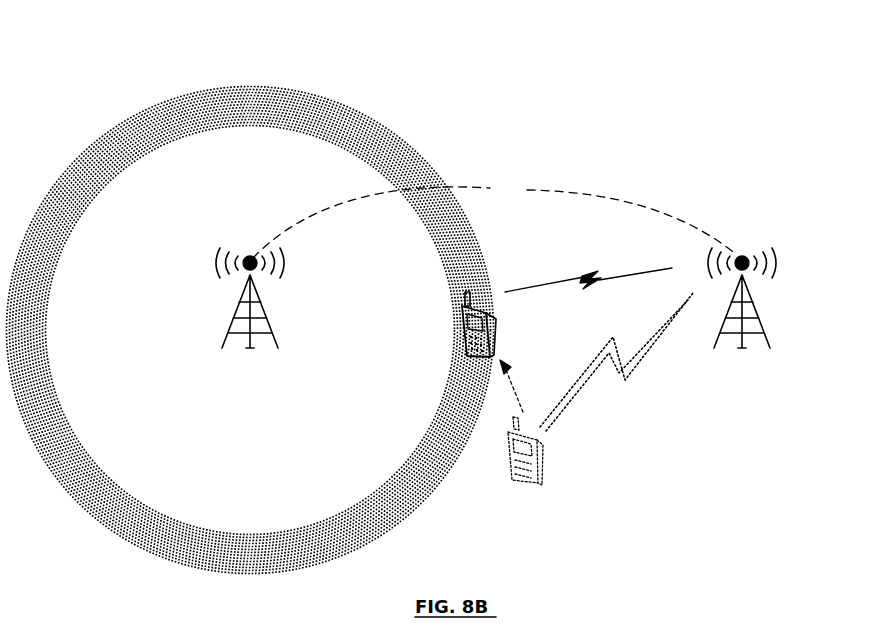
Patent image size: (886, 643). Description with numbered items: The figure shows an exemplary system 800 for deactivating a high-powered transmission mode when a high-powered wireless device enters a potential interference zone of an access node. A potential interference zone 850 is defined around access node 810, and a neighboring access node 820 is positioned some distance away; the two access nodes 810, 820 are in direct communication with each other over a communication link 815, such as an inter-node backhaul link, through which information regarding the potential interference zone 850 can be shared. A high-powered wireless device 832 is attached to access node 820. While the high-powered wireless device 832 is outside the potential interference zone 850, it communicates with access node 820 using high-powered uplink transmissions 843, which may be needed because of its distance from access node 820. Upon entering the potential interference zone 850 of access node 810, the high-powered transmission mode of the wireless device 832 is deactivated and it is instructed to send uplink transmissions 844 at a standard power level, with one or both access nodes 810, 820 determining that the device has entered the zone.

The system 800 is at (585, 56).
The access node 810 is at (230, 333).
The communication link 815 is at (514, 166).
The access node 820 is at (766, 336).
The high-powered wireless device 832 is at (497, 338).
The high-powered uplink transmissions 843 is at (628, 380).
The uplink transmissions 844 is at (584, 271).
The potential interference zone 850 is at (276, 568).